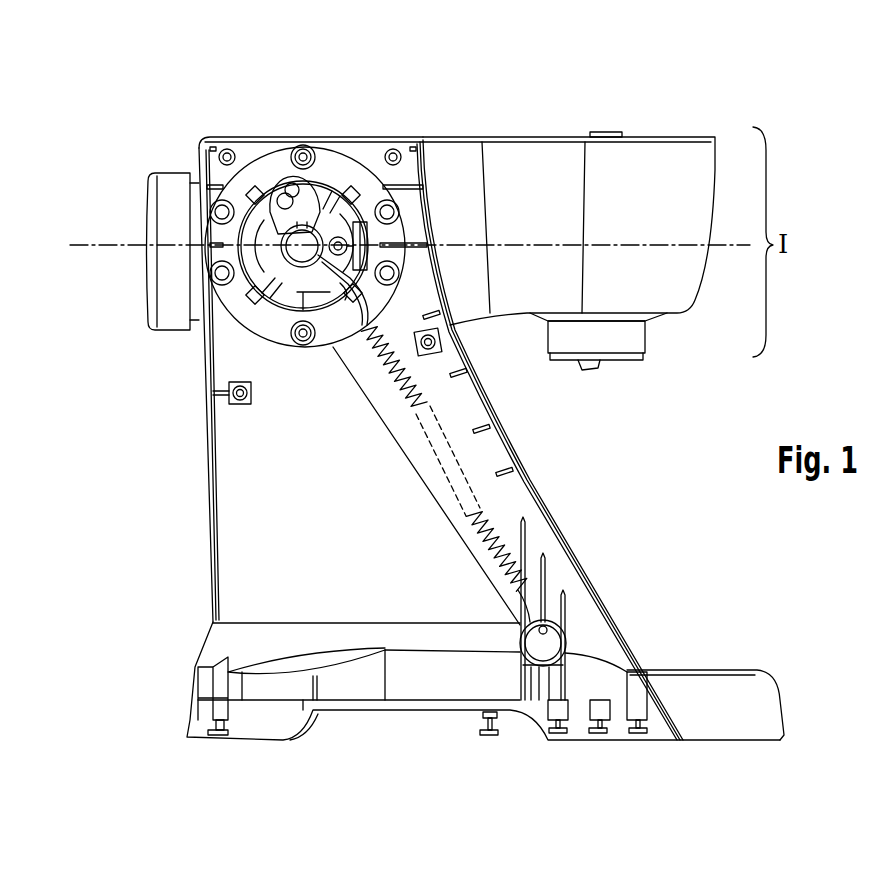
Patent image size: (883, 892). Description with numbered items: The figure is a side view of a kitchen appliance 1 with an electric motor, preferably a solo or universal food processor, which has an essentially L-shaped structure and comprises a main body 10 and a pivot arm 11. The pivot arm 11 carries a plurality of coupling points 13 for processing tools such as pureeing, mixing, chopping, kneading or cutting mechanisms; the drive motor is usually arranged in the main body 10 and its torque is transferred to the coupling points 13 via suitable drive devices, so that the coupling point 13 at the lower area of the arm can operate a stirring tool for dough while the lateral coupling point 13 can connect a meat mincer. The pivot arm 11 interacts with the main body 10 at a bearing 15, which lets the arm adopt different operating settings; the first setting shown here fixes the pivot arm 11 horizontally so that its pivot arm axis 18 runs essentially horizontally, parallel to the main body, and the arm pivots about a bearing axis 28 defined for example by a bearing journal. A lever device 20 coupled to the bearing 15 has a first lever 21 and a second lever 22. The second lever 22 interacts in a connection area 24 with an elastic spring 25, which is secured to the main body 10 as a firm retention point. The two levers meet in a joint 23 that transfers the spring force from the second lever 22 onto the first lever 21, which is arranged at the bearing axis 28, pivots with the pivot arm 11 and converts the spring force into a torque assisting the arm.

The kitchen appliance 1 is at (150, 90).
The main body 10 is at (213, 530).
The pivot arm 11 is at (520, 160).
The coupling points 13 is at (607, 130).
The bearing 15 is at (222, 333).
The pivot arm axis 18 is at (98, 240).
The lever device 20 is at (283, 158).
The first lever 21 is at (312, 232).
The second lever 22 is at (290, 285).
The joint 23 is at (293, 190).
The connection area 24 is at (352, 280).
The elastic spring 25 is at (420, 385).
The bearing axis 28 is at (280, 235).